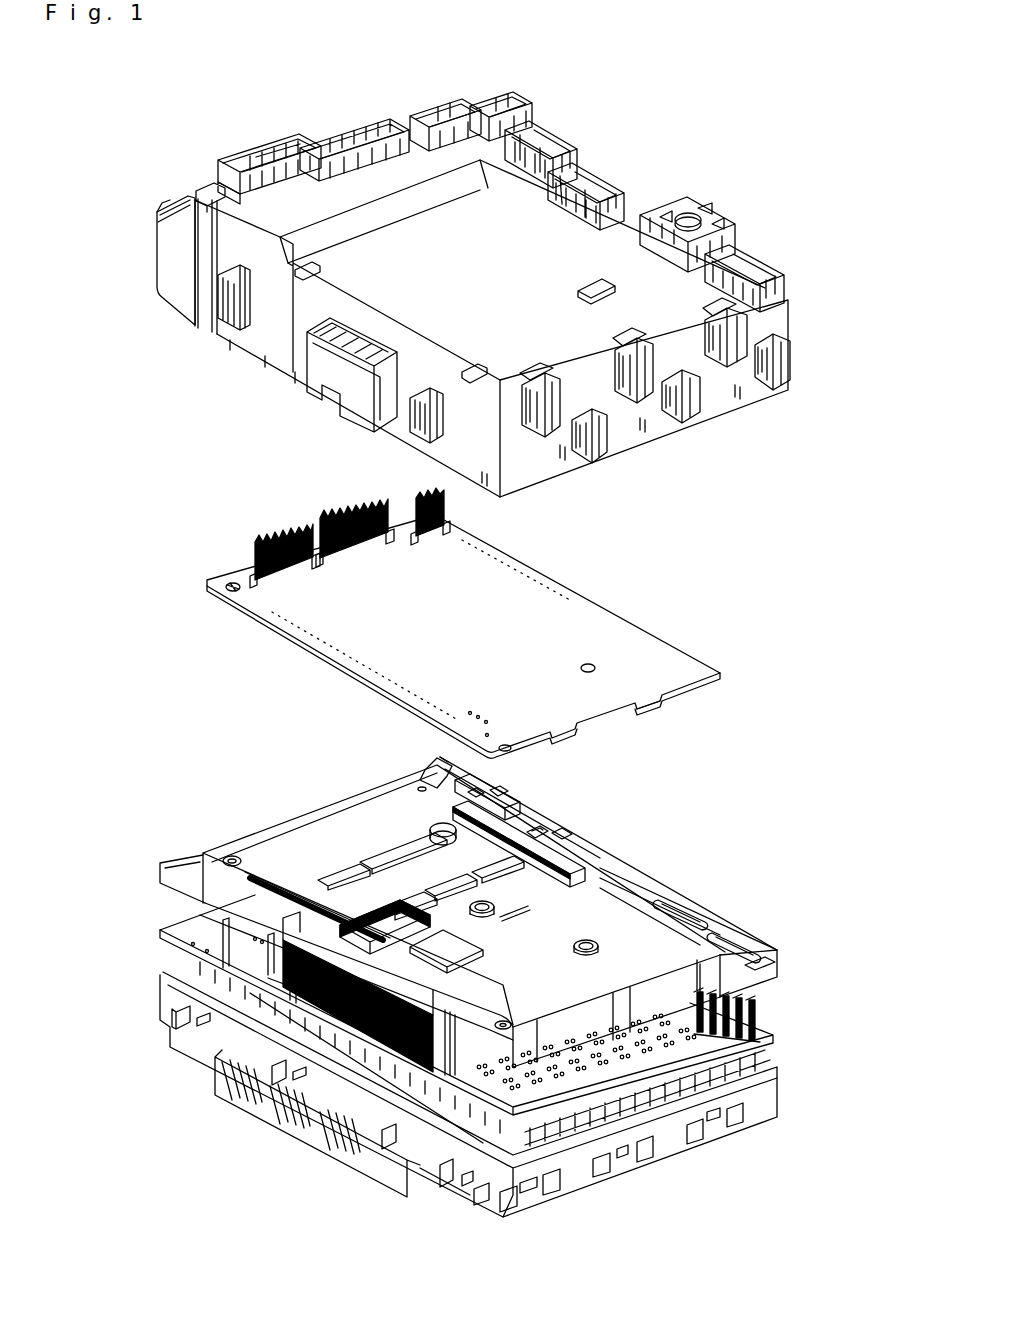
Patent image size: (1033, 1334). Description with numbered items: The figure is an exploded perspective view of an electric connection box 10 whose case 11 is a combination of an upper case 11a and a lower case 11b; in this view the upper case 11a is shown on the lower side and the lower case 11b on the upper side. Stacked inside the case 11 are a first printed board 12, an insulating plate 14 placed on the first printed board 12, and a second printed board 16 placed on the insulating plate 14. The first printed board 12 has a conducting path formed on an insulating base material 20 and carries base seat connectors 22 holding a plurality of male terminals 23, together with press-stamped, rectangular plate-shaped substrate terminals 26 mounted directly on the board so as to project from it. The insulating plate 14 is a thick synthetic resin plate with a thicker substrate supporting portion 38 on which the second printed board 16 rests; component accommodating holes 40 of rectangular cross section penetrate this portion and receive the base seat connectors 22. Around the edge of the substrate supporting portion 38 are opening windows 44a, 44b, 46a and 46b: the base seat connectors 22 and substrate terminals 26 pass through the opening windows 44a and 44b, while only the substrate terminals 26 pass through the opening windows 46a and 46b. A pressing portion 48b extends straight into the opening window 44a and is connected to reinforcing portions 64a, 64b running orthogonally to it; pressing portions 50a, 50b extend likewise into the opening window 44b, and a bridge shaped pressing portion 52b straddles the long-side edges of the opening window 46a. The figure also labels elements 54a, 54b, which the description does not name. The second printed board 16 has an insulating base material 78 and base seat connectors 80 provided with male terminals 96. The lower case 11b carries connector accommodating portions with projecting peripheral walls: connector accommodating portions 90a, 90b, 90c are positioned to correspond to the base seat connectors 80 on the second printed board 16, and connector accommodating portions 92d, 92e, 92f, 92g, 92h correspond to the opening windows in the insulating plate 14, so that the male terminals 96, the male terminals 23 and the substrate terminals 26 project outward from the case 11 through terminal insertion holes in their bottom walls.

The electric connection box 10 is at (757, 157).
The case 11 is at (52, 658).
The upper case 11a is at (173, 997).
The lower case 11b is at (177, 263).
The first printed board 12 is at (782, 1032).
The insulating plate 14 is at (630, 858).
The second printed board 16 is at (660, 632).
The insulating base material 20 is at (739, 1077).
The base seat connectors 22 is at (450, 1147).
The male terminals 23 is at (268, 962).
The substrate terminals 26 is at (760, 1000).
The substrate supporting portion 38 is at (268, 858).
The component accommodating holes 40 is at (398, 845).
The opening window 44a is at (432, 762).
The opening window 44b is at (508, 816).
The opening window 46a is at (677, 903).
The opening window 46b is at (728, 933).
The pressing portion 48b is at (447, 757).
The pressing portion 50a is at (540, 830).
The pressing portion 50b is at (480, 798).
The bridge shaped pressing portion 52b is at (688, 916).
The slot 54a is at (761, 968).
The slot 54b is at (742, 945).
The reinforcing portion 64a is at (565, 832).
The reinforcing portion 64b is at (505, 796).
The insulating base material 78 is at (640, 693).
The base seat connectors 80 is at (283, 516).
The connector accommodating portion 90a is at (283, 152).
The connector accommodating portion 90b is at (348, 122).
The connector accommodating portion 90c is at (417, 113).
The connector accommodating portion 92d is at (447, 90).
The connector accommodating portion 92e is at (516, 141).
The connector accommodating portion 92f is at (584, 178).
The connector accommodating portion 92g is at (656, 228).
The connector accommodating portion 92h is at (722, 258).
The male terminals 96 is at (260, 552).